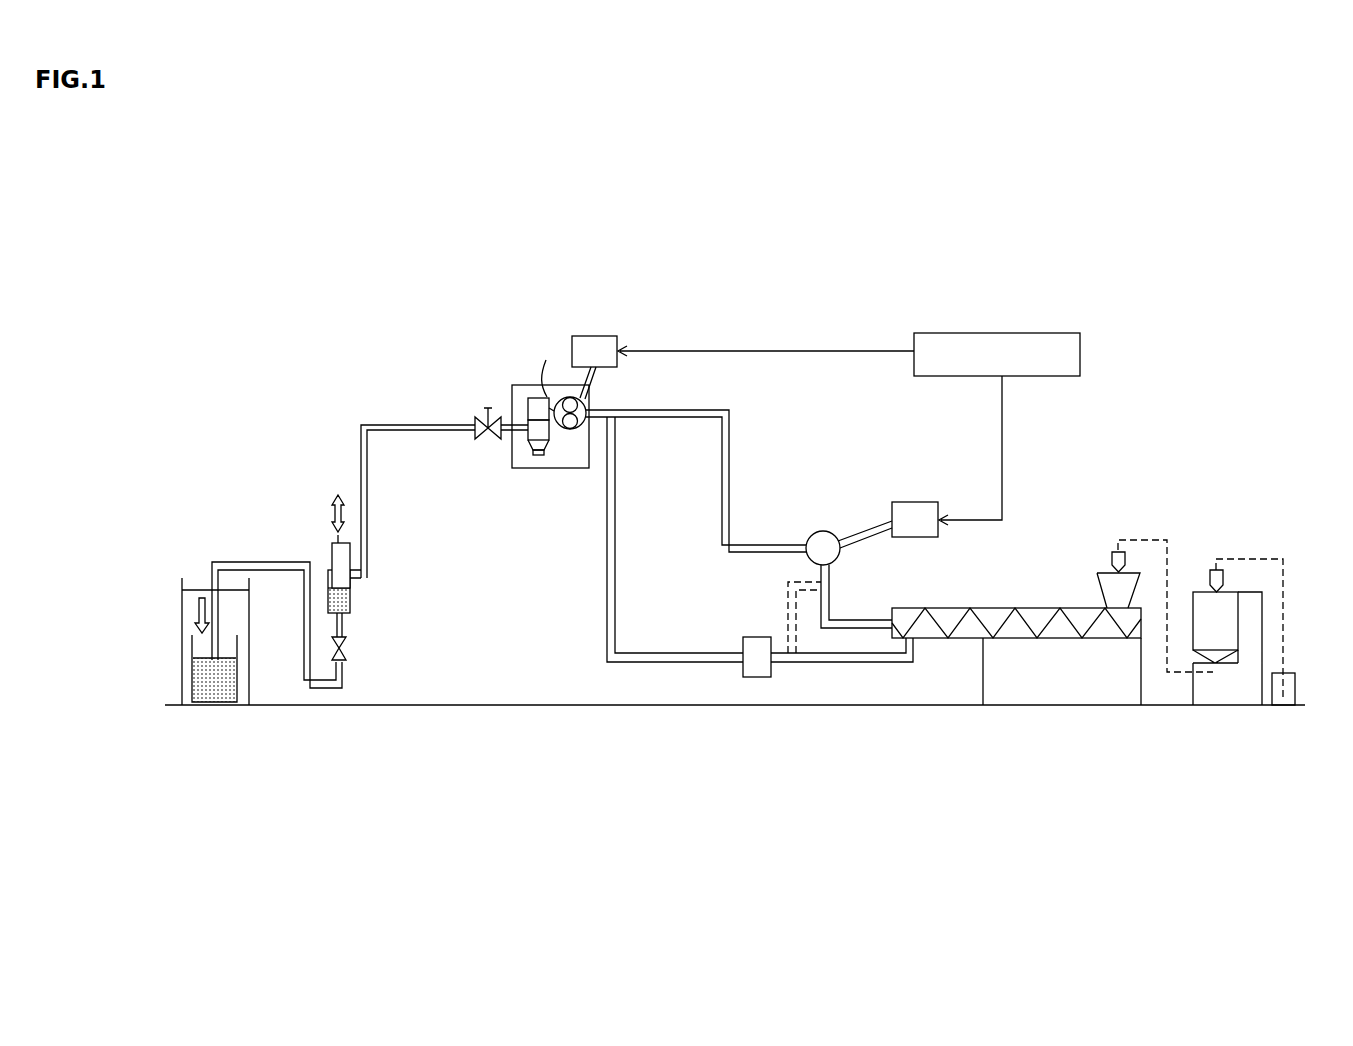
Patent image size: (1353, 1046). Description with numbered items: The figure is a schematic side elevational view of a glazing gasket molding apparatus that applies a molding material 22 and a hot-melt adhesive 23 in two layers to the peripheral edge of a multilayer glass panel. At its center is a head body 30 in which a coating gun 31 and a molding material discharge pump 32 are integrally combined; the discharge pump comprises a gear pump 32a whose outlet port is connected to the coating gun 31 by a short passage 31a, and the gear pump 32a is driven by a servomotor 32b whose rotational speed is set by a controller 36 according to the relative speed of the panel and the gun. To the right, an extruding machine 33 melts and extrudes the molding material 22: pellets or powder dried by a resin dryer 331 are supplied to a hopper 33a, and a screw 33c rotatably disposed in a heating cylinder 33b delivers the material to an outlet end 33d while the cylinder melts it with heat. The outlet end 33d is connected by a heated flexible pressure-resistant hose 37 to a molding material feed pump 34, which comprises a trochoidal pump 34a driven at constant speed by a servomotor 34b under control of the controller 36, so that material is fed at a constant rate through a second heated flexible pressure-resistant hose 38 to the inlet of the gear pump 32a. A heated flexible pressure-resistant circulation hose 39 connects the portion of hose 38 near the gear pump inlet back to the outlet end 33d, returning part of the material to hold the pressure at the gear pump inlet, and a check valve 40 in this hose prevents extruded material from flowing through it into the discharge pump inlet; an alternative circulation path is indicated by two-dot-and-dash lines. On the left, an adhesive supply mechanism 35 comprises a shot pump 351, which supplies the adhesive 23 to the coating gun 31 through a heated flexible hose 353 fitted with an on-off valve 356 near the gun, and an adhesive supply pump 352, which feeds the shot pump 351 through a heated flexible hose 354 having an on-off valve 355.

The molding material 22 is at (927, 628).
The hot-melt adhesive 23 is at (222, 693).
The head body 30 is at (548, 468).
The coating gun 31 is at (528, 396).
The short passage 31a is at (546, 360).
The molding material discharge pump 32 is at (712, 358).
The gear pump 32a is at (586, 408).
The servomotor 32b is at (617, 360).
The extruding machine 33 is at (1062, 565).
The hopper 33a is at (1140, 572).
The heating cylinder 33b is at (995, 607).
The screw 33c is at (1048, 623).
The outlet end 33d is at (890, 620).
The molding material feed pump 34 is at (943, 447).
The trochoidal pump 34a is at (826, 531).
The servomotor 34b is at (915, 502).
The adhesive supply mechanism 35 is at (225, 553).
The controller 36 is at (1002, 333).
The flexible pressure-resistant hose 37 is at (832, 600).
The flexible pressure-resistant hose 38 is at (730, 440).
The flexible pressure-resistant circulation hose 39 is at (685, 652).
The check valve 40 is at (757, 677).
The resin dryer 331 is at (1230, 592).
The shot pump 351 is at (351, 555).
The adhesive supply pump 352 is at (192, 643).
The flexible hose 353 is at (407, 425).
The flexible hose 354 is at (290, 562).
The on-off valve 355 is at (347, 653).
The on-off valve 356 is at (483, 438).